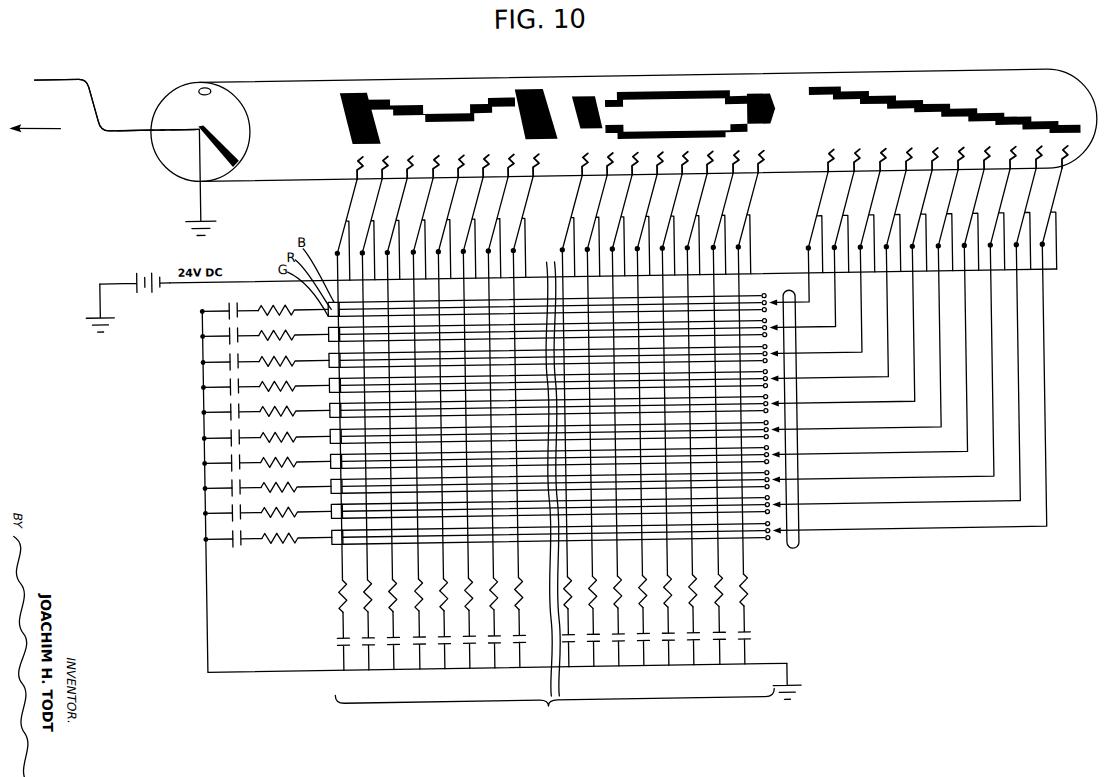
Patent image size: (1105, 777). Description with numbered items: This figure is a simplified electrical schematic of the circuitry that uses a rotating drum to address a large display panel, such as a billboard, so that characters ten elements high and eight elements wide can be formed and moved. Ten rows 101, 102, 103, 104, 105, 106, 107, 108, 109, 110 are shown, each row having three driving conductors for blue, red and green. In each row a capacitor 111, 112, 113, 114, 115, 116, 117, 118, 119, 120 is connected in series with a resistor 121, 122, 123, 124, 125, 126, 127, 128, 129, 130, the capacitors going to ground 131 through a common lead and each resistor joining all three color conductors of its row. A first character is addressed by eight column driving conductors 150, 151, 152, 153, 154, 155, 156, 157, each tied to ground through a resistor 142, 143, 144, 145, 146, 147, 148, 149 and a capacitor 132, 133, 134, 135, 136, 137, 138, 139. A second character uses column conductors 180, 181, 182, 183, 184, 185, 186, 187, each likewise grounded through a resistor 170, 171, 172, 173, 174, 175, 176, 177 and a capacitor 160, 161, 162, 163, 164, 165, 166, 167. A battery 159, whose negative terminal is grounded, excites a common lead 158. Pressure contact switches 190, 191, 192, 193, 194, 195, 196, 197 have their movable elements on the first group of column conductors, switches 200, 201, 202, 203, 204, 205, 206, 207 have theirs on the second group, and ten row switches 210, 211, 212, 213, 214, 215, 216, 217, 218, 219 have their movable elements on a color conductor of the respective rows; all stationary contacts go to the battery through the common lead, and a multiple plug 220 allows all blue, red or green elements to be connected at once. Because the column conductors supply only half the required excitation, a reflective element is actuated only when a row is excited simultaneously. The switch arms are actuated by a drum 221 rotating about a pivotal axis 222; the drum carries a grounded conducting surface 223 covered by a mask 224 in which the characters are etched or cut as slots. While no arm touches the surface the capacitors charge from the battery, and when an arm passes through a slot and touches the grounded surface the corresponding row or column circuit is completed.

The row 101 is at (199, 311).
The row 102 is at (200, 336).
The row 103 is at (200, 362).
The row 104 is at (200, 387).
The row 105 is at (201, 412).
The row 106 is at (201, 438).
The row 107 is at (202, 463).
The row 108 is at (202, 488).
The row 109 is at (202, 513).
The row 110 is at (203, 539).
The capacitor 111 is at (241, 303).
The capacitor 112 is at (241, 328).
The capacitor 113 is at (241, 354).
The capacitor 114 is at (241, 379).
The capacitor 115 is at (241, 404).
The capacitor 116 is at (241, 430).
The capacitor 117 is at (241, 455).
The capacitor 118 is at (241, 480).
The capacitor 119 is at (241, 505).
The capacitor 120 is at (241, 531).
The resistor 121 is at (287, 302).
The resistor 122 is at (287, 327).
The resistor 123 is at (287, 353).
The resistor 124 is at (287, 378).
The resistor 125 is at (287, 403).
The resistor 126 is at (287, 429).
The resistor 127 is at (287, 454).
The resistor 128 is at (287, 479).
The resistor 129 is at (287, 504).
The resistor 130 is at (287, 530).
The ground 131 is at (213, 218).
The capacitor 132 is at (343, 668).
The capacitor 133 is at (368, 668).
The capacitor 134 is at (393, 668).
The capacitor 135 is at (419, 668).
The capacitor 136 is at (444, 668).
The capacitor 137 is at (469, 668).
The capacitor 138 is at (494, 668).
The capacitor 139 is at (519, 668).
The resistor 142 is at (345, 576).
The resistor 143 is at (370, 576).
The resistor 144 is at (395, 576).
The resistor 145 is at (421, 576).
The resistor 146 is at (446, 576).
The resistor 147 is at (471, 576).
The resistor 148 is at (496, 576).
The resistor 149 is at (521, 576).
The column driving conductor 150 is at (346, 415).
The column driving conductor 151 is at (371, 415).
The column driving conductor 152 is at (396, 414).
The column driving conductor 153 is at (422, 414).
The column driving conductor 154 is at (447, 413).
The column driving conductor 155 is at (472, 413).
The column driving conductor 156 is at (497, 413).
The column driving conductor 157 is at (522, 412).
The common lead 158 is at (548, 270).
The battery 159 is at (130, 272).
The capacitor 160 is at (568, 668).
The capacitor 161 is at (593, 668).
The capacitor 162 is at (618, 668).
The capacitor 163 is at (643, 668).
The capacitor 164 is at (668, 668).
The capacitor 165 is at (693, 668).
The capacitor 166 is at (719, 668).
The capacitor 167 is at (744, 668).
The resistor 170 is at (570, 576).
The resistor 171 is at (595, 576).
The resistor 172 is at (620, 576).
The resistor 173 is at (645, 576).
The resistor 174 is at (670, 576).
The resistor 175 is at (695, 576).
The resistor 176 is at (721, 576).
The resistor 177 is at (746, 576).
The column conductor 180 is at (571, 412).
The column conductor 181 is at (596, 411).
The column conductor 182 is at (621, 411).
The column conductor 183 is at (646, 410).
The column conductor 184 is at (671, 410).
The column conductor 185 is at (696, 410).
The column conductor 186 is at (722, 409).
The column conductor 187 is at (747, 409).
The pressure contact switch 190 is at (345, 219).
The pressure contact switch 191 is at (370, 219).
The pressure contact switch 192 is at (395, 218).
The pressure contact switch 193 is at (421, 218).
The pressure contact switch 194 is at (446, 217).
The pressure contact switch 195 is at (471, 217).
The pressure contact switch 196 is at (496, 217).
The pressure contact switch 197 is at (521, 216).
The pressure sensitive contact switch 200 is at (570, 215).
The pressure sensitive contact switch 201 is at (595, 215).
The pressure sensitive contact switch 202 is at (620, 215).
The pressure sensitive contact switch 203 is at (645, 214).
The pressure sensitive contact switch 204 is at (670, 214).
The pressure sensitive contact switch 205 is at (695, 213).
The pressure sensitive contact switch 206 is at (721, 213).
The pressure sensitive contact switch 207 is at (746, 213).
The pressure contact switch 210 is at (801, 228).
The pressure contact switch 211 is at (815, 239).
The pressure contact switch 212 is at (828, 253).
The pressure contact switch 213 is at (841, 264).
The pressure contact switch 214 is at (854, 277).
The pressure contact switch 215 is at (867, 289).
The pressure contact switch 216 is at (881, 302).
The pressure contact switch 217 is at (894, 315).
The pressure contact switch 218 is at (907, 326).
The pressure contact switch 219 is at (920, 340).
The multiple plug 220 is at (799, 548).
The drum 221 is at (147, 81).
The pivotal axis 222 is at (40, 125).
The conducting surface 223 is at (216, 83).
The mask 224 is at (604, 95).